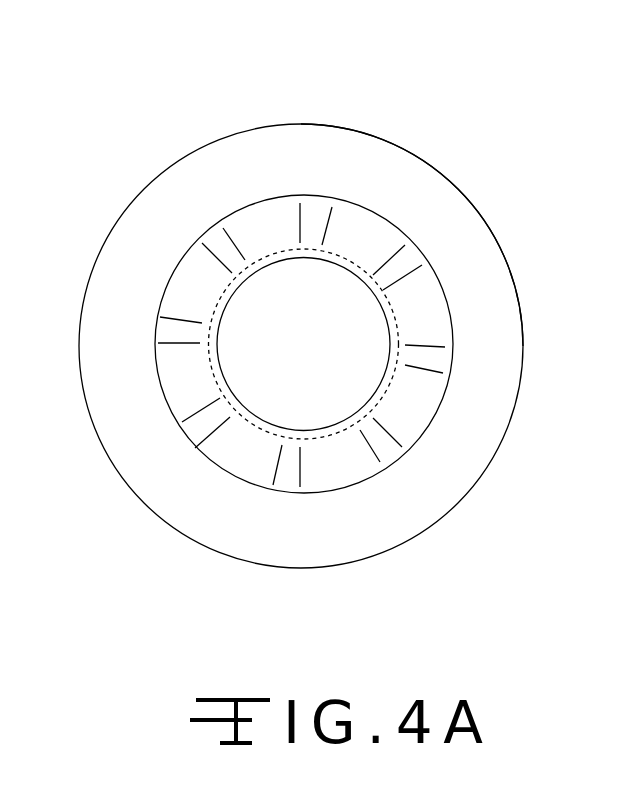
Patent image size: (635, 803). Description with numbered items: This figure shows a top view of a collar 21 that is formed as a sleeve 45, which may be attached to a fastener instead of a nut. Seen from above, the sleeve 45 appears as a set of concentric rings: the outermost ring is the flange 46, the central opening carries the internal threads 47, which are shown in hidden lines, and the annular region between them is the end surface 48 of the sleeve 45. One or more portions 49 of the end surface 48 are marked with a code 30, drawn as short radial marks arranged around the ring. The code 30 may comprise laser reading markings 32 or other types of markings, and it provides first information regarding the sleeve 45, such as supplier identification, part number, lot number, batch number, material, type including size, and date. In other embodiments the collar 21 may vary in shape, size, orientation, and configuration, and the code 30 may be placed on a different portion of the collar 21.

The collar 21 is at (425, 130).
The code 30 is at (297, 210).
The laser reading markings 32 is at (238, 225).
The sleeve 45 is at (450, 290).
The flange 46 is at (498, 333).
The internal threads 47 is at (432, 423).
The end surface 48 is at (328, 470).
The portions of the end surface 49 is at (348, 220).